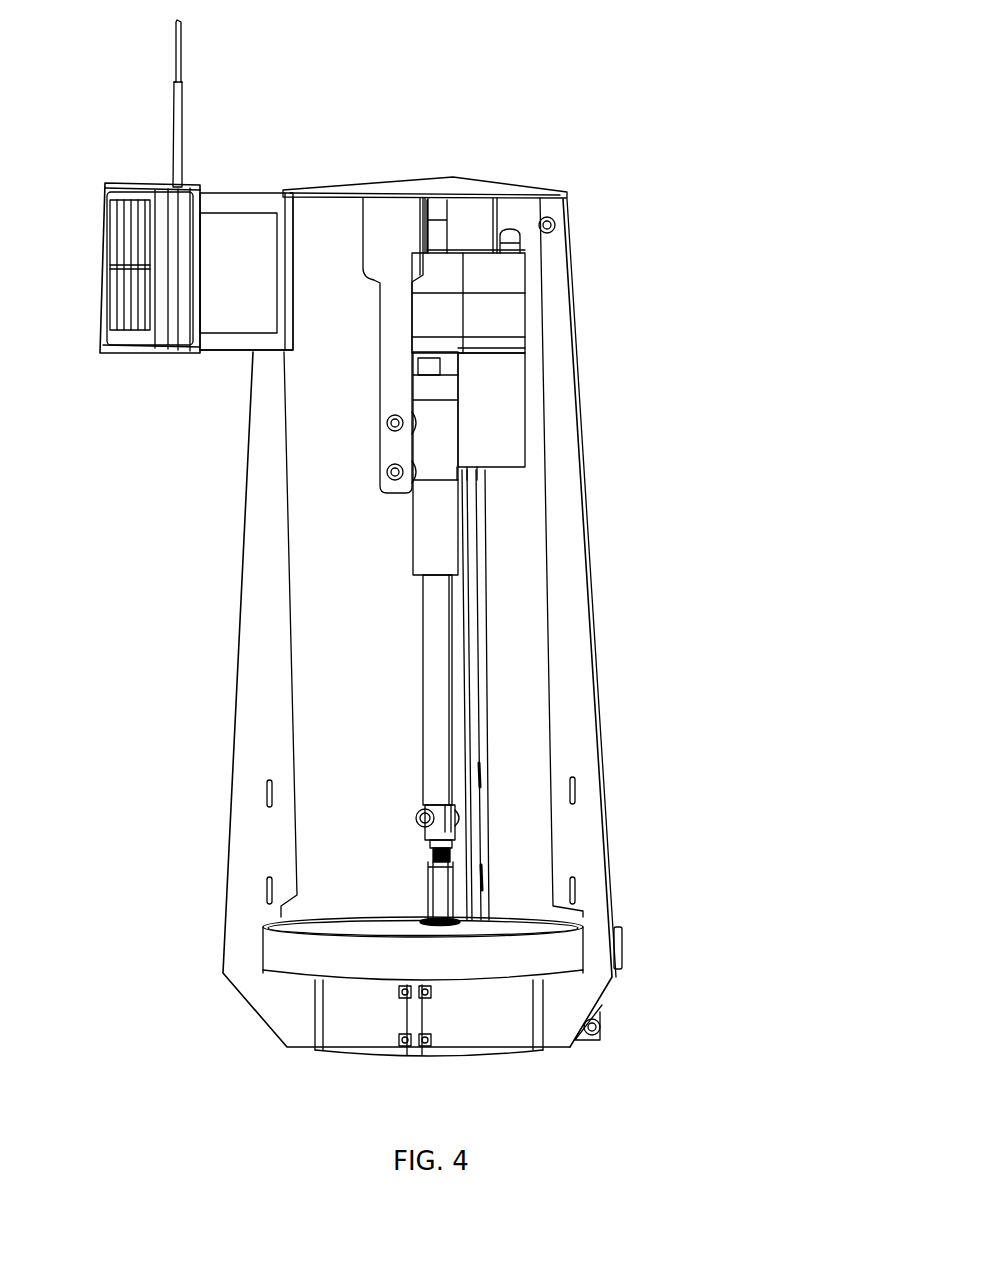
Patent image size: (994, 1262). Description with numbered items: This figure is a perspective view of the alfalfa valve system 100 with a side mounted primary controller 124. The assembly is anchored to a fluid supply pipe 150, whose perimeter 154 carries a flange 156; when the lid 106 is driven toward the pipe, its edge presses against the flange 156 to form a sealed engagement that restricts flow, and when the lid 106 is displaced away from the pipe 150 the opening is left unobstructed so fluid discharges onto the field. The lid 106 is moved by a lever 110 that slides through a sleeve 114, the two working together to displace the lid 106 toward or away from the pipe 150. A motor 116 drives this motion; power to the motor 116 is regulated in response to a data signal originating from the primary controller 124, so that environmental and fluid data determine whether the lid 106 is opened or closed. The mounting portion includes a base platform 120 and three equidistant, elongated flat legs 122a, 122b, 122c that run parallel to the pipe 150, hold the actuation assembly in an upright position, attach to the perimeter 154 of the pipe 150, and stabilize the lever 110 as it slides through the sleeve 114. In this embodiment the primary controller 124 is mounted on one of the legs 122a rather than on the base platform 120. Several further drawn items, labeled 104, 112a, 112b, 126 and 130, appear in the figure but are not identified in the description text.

The system 100 is at (729, 106).
The connecting rod 104 is at (430, 867).
The lid 106 is at (388, 917).
The lever 110 is at (437, 680).
The upper shaft portion 112a is at (437, 598).
The lower shaft portion 112b is at (440, 785).
The sleeve 114 is at (432, 550).
The motor 116 is at (440, 435).
The base platform 120 is at (399, 190).
The leg 122a is at (250, 705).
The leg 122b is at (577, 405).
The leg 122c is at (478, 698).
The primary controller 124 is at (268, 126).
The antenna 126 is at (172, 128).
The motor 130 is at (500, 490).
The fluid supply pipe 150 is at (298, 1069).
The perimeter of the pipe 154 is at (548, 952).
The flange 156 is at (282, 927).